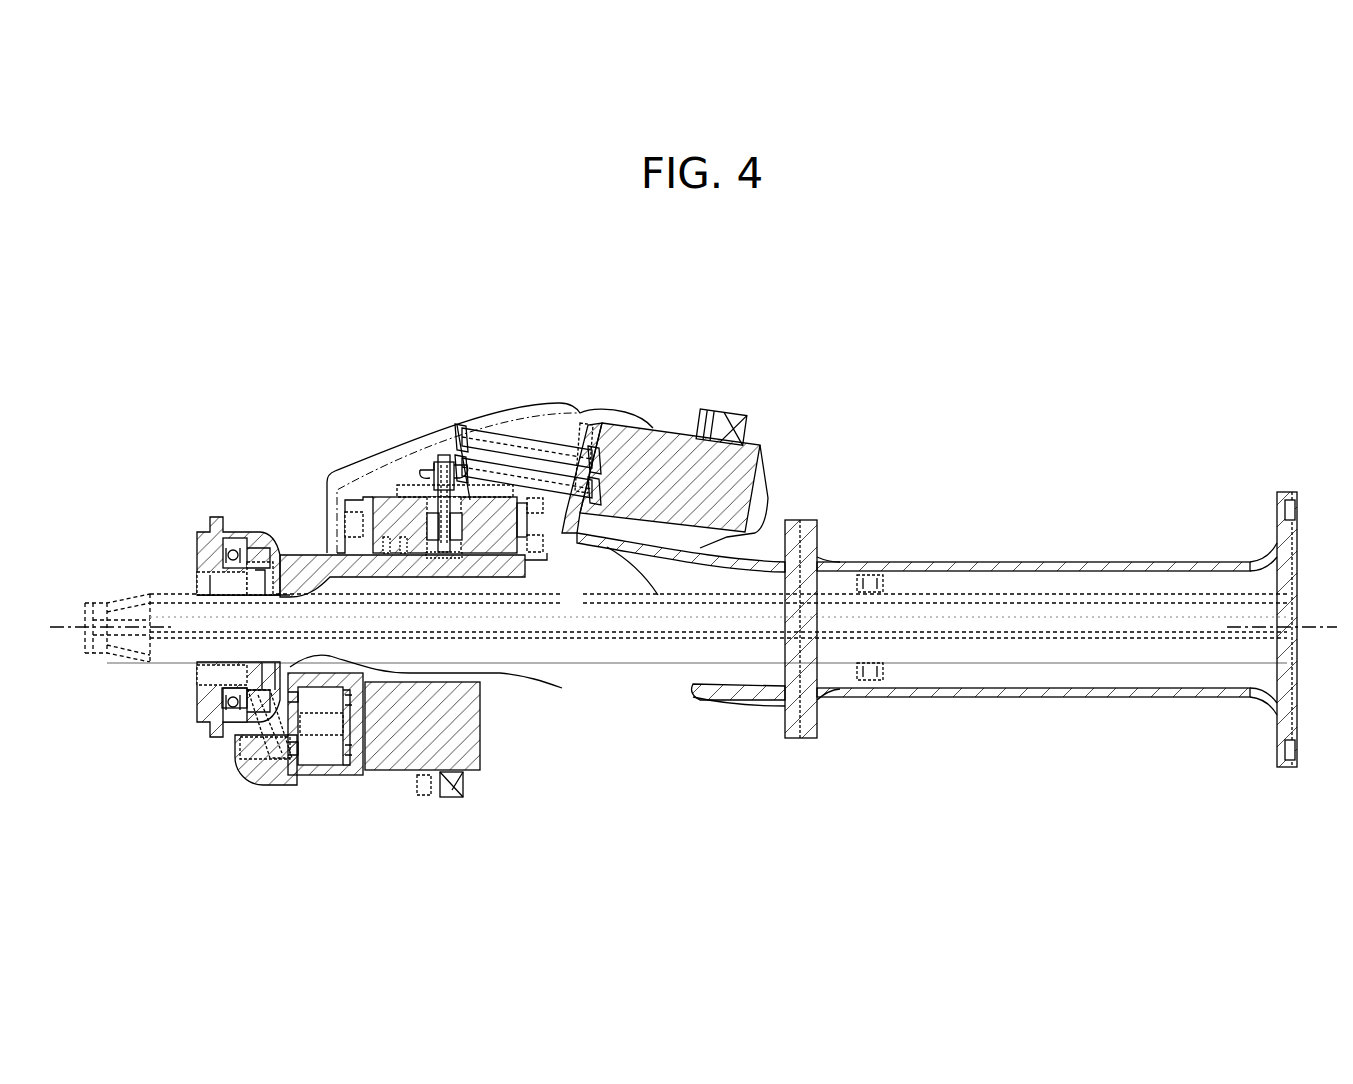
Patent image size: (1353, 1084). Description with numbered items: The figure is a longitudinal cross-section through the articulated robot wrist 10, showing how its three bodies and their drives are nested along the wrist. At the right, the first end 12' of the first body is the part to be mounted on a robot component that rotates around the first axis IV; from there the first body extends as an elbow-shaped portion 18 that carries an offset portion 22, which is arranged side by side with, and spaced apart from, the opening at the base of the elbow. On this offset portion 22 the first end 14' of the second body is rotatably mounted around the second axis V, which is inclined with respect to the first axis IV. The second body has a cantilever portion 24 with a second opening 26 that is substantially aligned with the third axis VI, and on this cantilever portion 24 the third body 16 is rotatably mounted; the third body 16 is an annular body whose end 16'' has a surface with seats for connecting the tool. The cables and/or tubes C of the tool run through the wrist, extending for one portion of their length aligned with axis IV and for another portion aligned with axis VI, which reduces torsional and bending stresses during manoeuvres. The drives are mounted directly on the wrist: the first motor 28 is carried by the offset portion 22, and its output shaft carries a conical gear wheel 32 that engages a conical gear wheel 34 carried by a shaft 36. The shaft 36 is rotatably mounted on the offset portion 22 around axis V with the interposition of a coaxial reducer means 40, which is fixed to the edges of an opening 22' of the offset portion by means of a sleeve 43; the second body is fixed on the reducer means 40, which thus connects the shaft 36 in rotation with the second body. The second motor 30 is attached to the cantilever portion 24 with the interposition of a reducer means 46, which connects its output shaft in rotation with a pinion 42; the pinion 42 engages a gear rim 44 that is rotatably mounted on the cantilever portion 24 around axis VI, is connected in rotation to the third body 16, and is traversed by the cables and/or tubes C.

The articulated robot wrist 10 is at (230, 335).
The first end of first body 12' is at (1256, 593).
The first end of second body 14' is at (686, 616).
The third body 16 is at (206, 539).
The second end of third body 16'' is at (182, 699).
The elbow-shaped portion 18 is at (710, 557).
The offset portion 22 is at (547, 451).
The opening of offset portion 22' is at (327, 494).
The cantilever portion 24 is at (270, 777).
The second opening 26 is at (322, 582).
The first motor 28 is at (760, 463).
The second motor 30 is at (470, 720).
The conical gear wheel 32 is at (465, 428).
The conical gear wheel 34 is at (423, 468).
The shaft 36 is at (437, 527).
The reducer means 40 is at (492, 523).
The pinion 42 is at (263, 727).
The sleeve 43 is at (518, 543).
The gear rim 44 is at (248, 695).
The reducer means 46 is at (315, 753).
The cables and/or tubes C is at (1024, 640).
The second axis V is at (443, 357).
The third axis VI is at (66, 627).
The first axis IV is at (1313, 627).